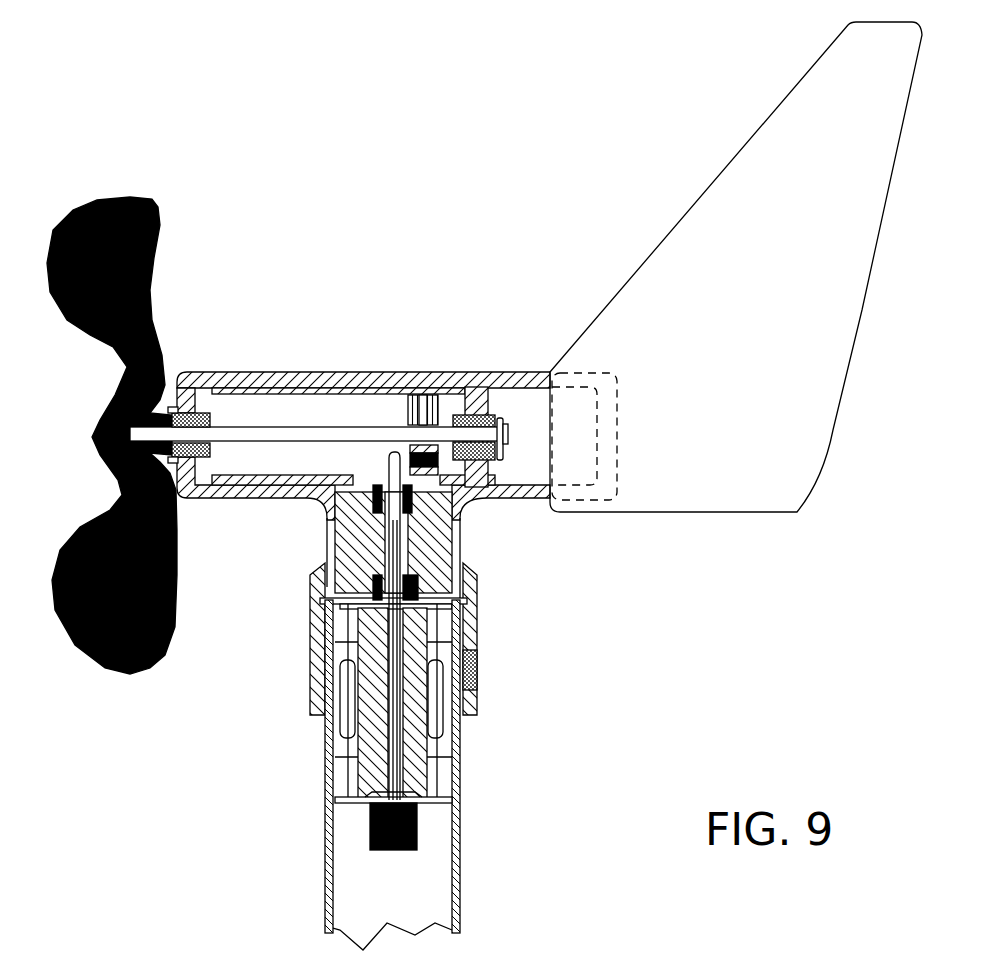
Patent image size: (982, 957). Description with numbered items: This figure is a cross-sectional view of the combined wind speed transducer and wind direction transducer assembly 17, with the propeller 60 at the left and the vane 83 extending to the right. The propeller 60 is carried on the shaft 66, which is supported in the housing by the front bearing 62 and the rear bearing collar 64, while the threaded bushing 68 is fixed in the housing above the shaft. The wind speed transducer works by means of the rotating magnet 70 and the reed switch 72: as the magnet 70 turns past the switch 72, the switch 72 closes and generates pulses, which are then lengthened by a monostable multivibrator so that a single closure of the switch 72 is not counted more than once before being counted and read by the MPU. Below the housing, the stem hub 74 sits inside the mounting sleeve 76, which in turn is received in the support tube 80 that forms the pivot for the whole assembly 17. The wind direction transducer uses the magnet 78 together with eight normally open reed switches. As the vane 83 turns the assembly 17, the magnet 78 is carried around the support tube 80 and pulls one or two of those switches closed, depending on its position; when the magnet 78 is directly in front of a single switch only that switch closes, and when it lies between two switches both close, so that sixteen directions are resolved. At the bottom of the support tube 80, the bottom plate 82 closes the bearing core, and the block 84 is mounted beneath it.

The wind speed and direction sensor assembly 17 is at (414, 180).
The propeller 60 is at (160, 297).
The front bearing 62 is at (178, 425).
The rear bearing collar 64 is at (476, 416).
The propeller shaft 66 is at (245, 428).
The threaded bushing 68 is at (432, 385).
The rotating magnet 70 is at (460, 500).
The reed switch 72 is at (458, 505).
The stem hub 74 is at (457, 555).
The mounting sleeve 76 is at (475, 645).
The magnet 78 is at (470, 688).
The reed switches 80 is at (470, 712).
The bottom plate 82 is at (455, 800).
The vane 83 is at (825, 428).
The magnet 84 is at (418, 838).